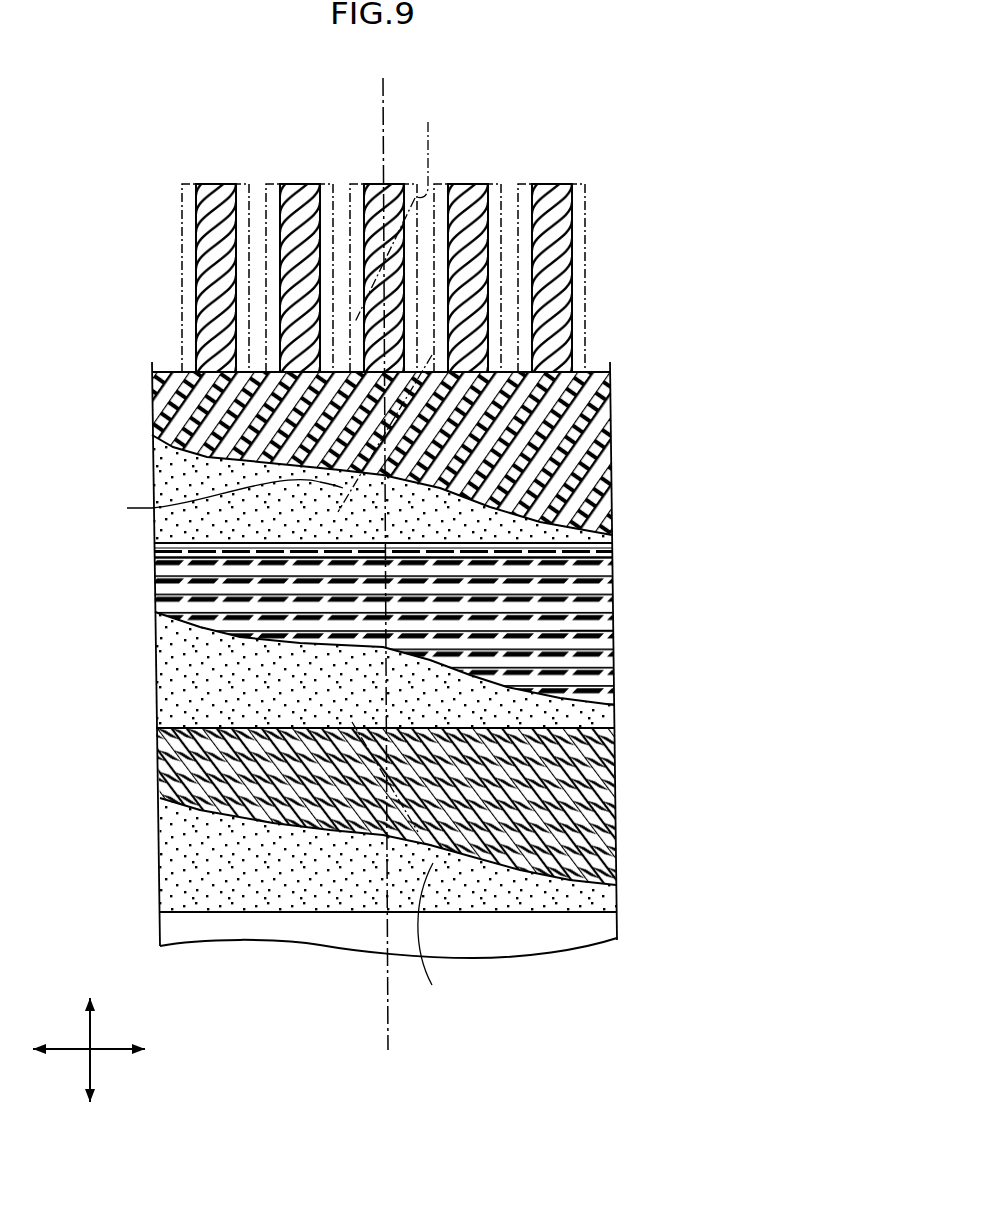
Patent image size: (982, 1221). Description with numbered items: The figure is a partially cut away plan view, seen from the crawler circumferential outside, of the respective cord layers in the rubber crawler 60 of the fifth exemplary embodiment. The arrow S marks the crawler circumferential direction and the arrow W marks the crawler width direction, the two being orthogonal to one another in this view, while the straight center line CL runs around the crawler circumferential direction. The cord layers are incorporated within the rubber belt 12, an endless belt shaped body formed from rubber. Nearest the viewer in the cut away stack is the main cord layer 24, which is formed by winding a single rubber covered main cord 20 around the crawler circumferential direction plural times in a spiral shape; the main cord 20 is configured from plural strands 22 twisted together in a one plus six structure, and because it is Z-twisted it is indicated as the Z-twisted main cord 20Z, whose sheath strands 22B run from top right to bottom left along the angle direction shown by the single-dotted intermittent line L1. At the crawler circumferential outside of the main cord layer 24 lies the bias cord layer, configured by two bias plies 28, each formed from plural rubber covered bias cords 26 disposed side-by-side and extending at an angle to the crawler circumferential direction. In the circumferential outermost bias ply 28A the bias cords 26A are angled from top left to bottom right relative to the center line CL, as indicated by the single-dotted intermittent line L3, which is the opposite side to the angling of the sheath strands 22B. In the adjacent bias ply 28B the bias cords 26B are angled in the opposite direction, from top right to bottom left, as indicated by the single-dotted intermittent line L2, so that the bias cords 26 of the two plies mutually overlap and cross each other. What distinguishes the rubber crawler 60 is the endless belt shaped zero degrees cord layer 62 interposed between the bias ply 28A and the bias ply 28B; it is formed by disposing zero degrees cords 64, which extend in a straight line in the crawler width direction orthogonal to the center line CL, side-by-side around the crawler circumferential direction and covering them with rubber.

The rubber crawler 60 is at (85, 92).
The rubber belt 12 is at (603, 928).
The main cord 20 is at (195, 227).
The Z-twisted main cord 20Z is at (312, 273).
The strands 22 is at (212, 183).
The sheath strands 22B is at (383, 245).
The main cord layer 24 is at (346, 236).
The bias cords 26 is at (453, 597).
The bias cords of outermost bias ply 26A is at (615, 770).
The bias cords of adjacent bias ply 26B is at (608, 402).
The bias ply 28 is at (448, 672).
The crawler circumferential outermost bias ply 28A is at (620, 895).
The bias ply adjacent to the outermost bias ply 28B is at (612, 492).
The zero degrees cord layer 62 is at (613, 610).
The zero degrees cords 64 is at (608, 627).
The center line CL is at (383, 78).
The single-dotted intermittent line L1 is at (398, 208).
The single-dotted intermittent line L2 is at (432, 940).
The single-dotted intermittent line L3 is at (220, 502).
The arrow S direction S is at (88, 1027).
The arrow W direction W is at (108, 1048).